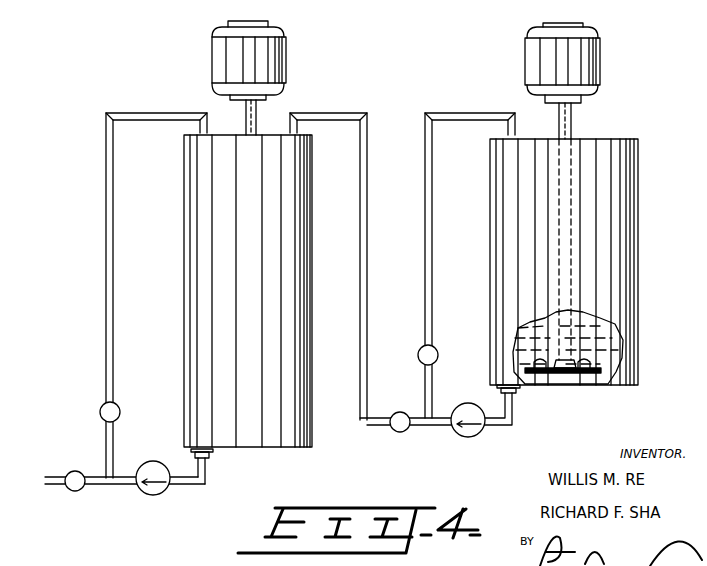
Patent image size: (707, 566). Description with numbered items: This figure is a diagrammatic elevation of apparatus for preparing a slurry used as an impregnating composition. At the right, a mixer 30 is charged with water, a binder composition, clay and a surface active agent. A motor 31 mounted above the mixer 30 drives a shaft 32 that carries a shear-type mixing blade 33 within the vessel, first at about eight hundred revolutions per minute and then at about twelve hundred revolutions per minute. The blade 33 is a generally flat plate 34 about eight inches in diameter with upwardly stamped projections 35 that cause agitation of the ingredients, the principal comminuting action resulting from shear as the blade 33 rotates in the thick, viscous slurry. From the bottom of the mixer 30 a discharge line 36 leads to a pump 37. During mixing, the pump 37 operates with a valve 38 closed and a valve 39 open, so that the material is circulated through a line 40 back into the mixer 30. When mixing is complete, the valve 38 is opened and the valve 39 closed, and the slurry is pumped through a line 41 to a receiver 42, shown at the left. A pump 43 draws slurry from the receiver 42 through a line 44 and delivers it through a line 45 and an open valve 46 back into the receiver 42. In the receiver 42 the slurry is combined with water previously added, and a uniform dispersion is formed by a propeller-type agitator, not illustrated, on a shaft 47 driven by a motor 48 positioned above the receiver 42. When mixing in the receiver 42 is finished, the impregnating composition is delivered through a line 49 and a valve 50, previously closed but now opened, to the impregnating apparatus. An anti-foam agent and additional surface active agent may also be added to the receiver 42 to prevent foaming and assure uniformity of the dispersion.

The mixer 30 is at (633, 257).
The motor 31 is at (603, 74).
The shaft 32 is at (574, 127).
The shear-type mixing blade 33 is at (590, 375).
The flat plate 34 is at (548, 372).
The upwardly stamped projections 35 is at (590, 363).
The discharge line 36 is at (496, 427).
The pump 37 is at (466, 439).
The valve 38 is at (396, 433).
The valve 39 is at (440, 356).
The line 40 is at (434, 391).
The line 41 is at (367, 339).
The receiver 42 is at (313, 368).
The pump 43 is at (160, 497).
The line 44 is at (207, 473).
The line 45 is at (116, 448).
The valve 46 is at (120, 408).
The shaft 47 is at (258, 119).
The motor 48 is at (288, 66).
The line 49 is at (97, 485).
The valve 50 is at (80, 494).